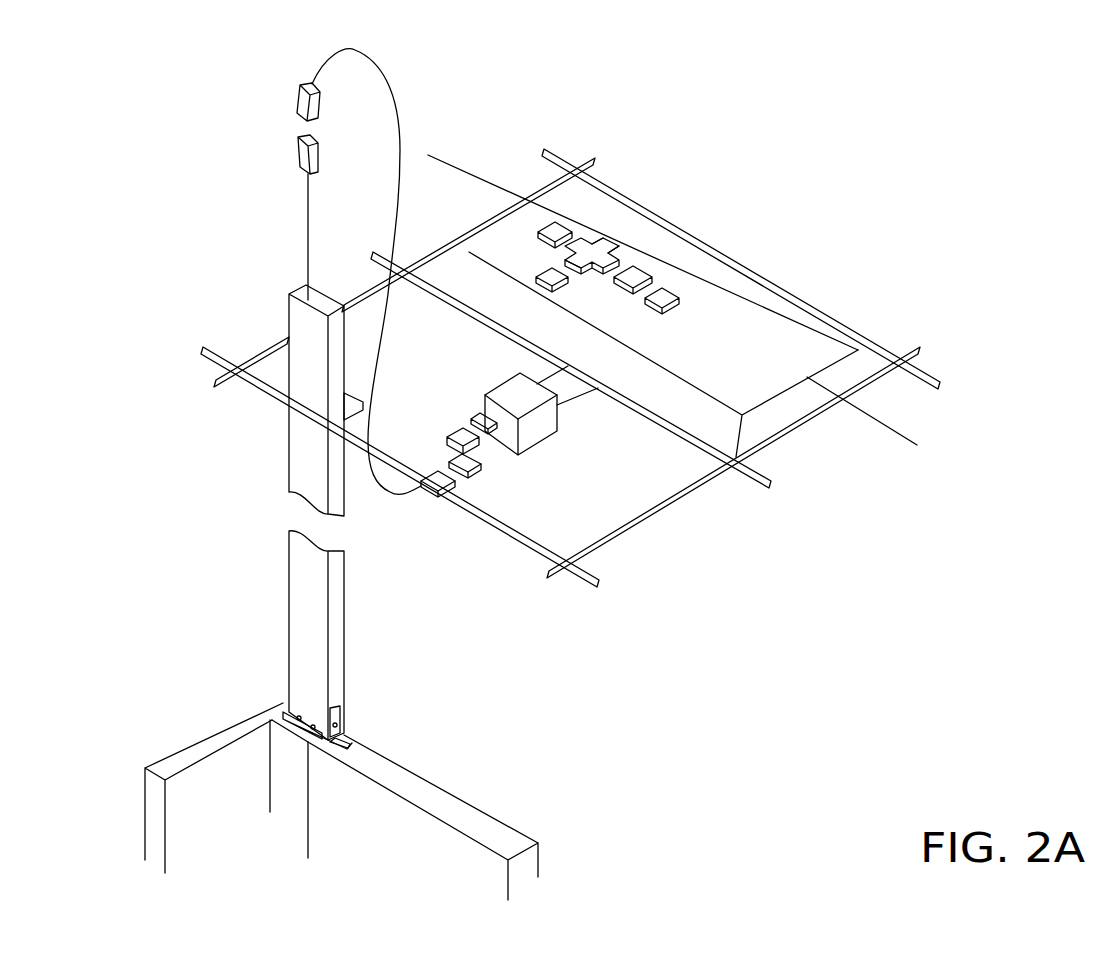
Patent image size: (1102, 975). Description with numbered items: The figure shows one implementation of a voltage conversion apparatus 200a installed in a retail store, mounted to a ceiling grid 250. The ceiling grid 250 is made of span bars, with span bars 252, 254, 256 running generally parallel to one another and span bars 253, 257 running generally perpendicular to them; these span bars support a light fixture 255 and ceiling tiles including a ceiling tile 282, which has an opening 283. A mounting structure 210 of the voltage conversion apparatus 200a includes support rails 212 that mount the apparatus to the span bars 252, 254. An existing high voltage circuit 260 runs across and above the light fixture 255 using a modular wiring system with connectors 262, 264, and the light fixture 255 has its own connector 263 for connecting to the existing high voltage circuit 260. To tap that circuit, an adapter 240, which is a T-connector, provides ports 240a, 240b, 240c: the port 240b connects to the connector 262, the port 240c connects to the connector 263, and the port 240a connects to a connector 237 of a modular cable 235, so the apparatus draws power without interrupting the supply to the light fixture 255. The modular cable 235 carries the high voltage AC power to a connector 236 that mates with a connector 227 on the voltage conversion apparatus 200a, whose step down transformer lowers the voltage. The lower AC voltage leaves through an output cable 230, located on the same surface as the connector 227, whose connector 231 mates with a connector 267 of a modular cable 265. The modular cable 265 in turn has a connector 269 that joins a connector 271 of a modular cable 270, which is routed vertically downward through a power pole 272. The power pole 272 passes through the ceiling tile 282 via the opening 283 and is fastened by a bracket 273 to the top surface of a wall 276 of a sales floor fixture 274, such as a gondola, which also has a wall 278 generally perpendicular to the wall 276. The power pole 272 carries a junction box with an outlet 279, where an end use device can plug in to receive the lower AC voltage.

The voltage conversion apparatus 200a is at (520, 395).
The mounting structure 210 is at (568, 428).
The support rails 212 is at (559, 371).
The connector 227 is at (478, 408).
The output cable 230 is at (482, 460).
The connector 231 is at (465, 480).
The modular cable 235 is at (468, 340).
The connector 236 is at (458, 430).
The connector 237 is at (536, 274).
The adapter 240 is at (590, 270).
The port 240a is at (576, 272).
The port 240b is at (588, 252).
The port 240c is at (709, 185).
The ceiling grid 250 is at (908, 376).
The span bar 252 is at (584, 580).
The span bar 253 is at (672, 505).
The span bar 254 is at (749, 481).
The light fixture 255 is at (819, 352).
The span bar 256 is at (924, 372).
The span bar 257 is at (257, 352).
The existing high voltage circuit 260 is at (475, 172).
The connector 262 is at (556, 228).
The connector 263 is at (636, 275).
The connector 264 is at (668, 296).
The modular cable 265 is at (390, 494).
The connector 267 is at (443, 497).
The connector 269 is at (296, 103).
The modular cable 270 is at (307, 237).
The connector 271 is at (298, 152).
The power pole 272 is at (289, 462).
The bracket 273 is at (340, 724).
The sales floor fixture 274 is at (318, 833).
The wall 276 is at (498, 830).
The wall 278 is at (192, 755).
The outlet 279 is at (298, 713).
The ceiling tile 282 is at (580, 518).
The opening 283 is at (330, 420).